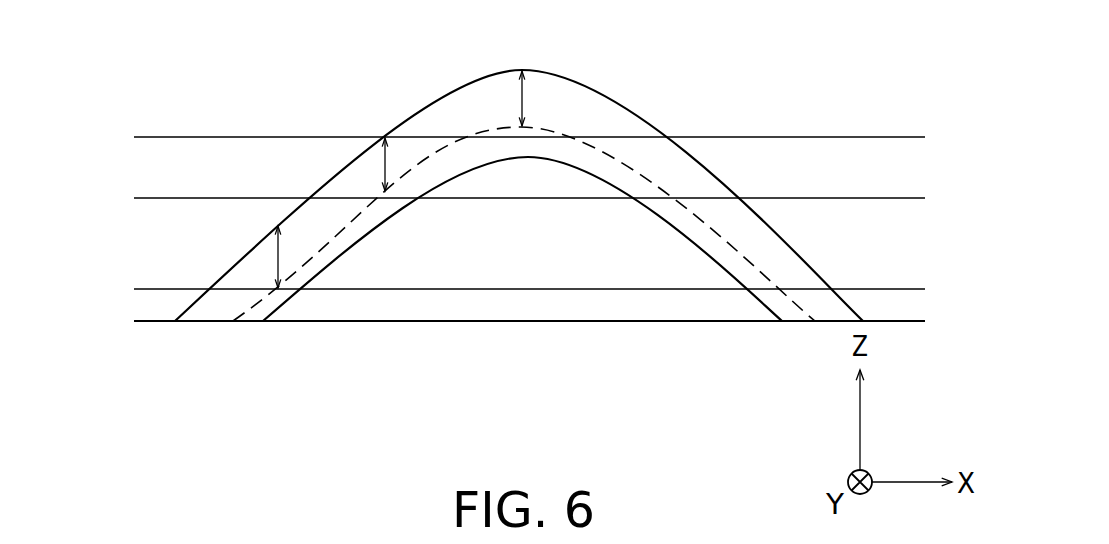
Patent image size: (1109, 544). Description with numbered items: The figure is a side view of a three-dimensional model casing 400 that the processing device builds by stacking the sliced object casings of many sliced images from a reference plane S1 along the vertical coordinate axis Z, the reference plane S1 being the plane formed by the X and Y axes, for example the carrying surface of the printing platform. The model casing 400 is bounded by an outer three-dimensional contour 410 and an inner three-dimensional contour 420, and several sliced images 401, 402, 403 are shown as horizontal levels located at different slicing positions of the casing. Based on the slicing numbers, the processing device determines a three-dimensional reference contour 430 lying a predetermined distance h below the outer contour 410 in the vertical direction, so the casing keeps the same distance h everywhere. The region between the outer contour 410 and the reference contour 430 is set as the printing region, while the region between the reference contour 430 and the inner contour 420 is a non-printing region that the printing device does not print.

The 3D model casing 400 is at (519, 172).
The outer 3D contour 410 is at (645, 116).
The inner 3D contour 420 is at (703, 254).
The 3D reference contour 430 is at (653, 180).
The sliced image 401 is at (861, 135).
The sliced image 402 is at (861, 196).
The sliced image 403 is at (861, 287).
The reference plane S1 is at (149, 319).